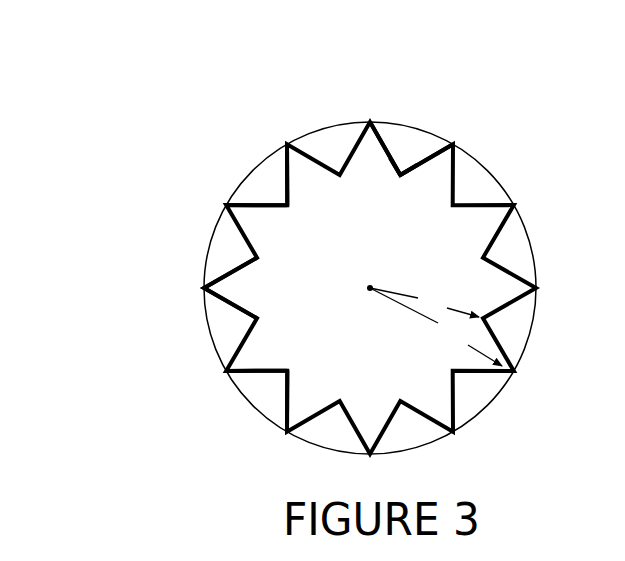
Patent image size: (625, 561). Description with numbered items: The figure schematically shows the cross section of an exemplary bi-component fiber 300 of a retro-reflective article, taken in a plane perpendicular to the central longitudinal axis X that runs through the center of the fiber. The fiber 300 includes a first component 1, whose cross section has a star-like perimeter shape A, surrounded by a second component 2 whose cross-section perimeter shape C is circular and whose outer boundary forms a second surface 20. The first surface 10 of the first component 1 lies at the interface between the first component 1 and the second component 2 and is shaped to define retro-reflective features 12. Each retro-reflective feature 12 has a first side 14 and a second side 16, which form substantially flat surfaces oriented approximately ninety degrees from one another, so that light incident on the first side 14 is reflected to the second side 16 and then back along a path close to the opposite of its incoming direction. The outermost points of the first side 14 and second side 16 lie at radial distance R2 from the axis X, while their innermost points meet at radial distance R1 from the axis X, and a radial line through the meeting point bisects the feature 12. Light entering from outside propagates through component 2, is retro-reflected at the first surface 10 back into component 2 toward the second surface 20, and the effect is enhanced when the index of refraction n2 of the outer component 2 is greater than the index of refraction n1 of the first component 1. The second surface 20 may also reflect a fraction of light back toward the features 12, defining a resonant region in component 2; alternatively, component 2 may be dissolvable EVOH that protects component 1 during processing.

The bi-component fiber 300 is at (163, 72).
The first component 1 is at (277, 199).
The second component 2 is at (207, 262).
The first surface 10 is at (265, 218).
The index of refraction of component 1 n1 is at (278, 202).
The index of refraction of outer component 2 n2 is at (251, 232).
The second surface 20 is at (203, 288).
The first side 14 is at (385, 147).
The second side 16 is at (417, 158).
The retro-reflective feature 12 is at (397, 182).
The cross section perimeter shape A is at (262, 376).
The cross-section perimeter shape C is at (270, 429).
The central longitudinal axis X is at (369, 305).
The radial distance R1 is at (424, 303).
The radial distance R2 is at (436, 327).